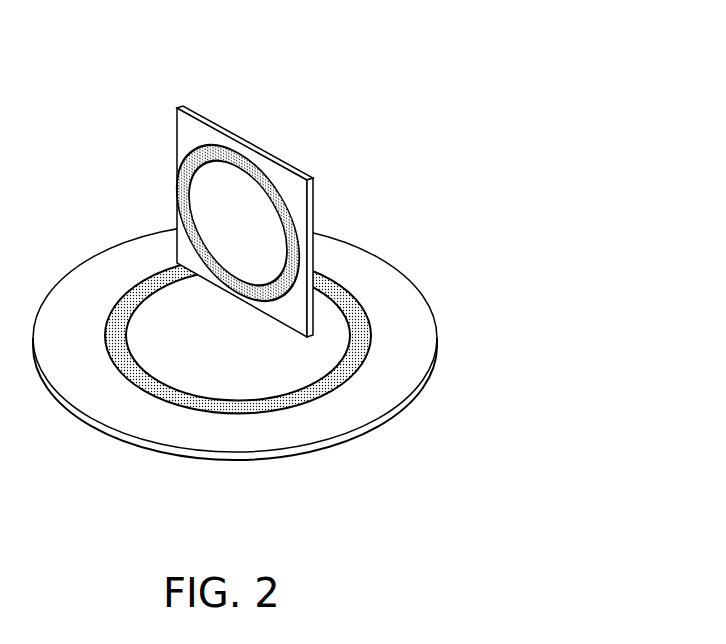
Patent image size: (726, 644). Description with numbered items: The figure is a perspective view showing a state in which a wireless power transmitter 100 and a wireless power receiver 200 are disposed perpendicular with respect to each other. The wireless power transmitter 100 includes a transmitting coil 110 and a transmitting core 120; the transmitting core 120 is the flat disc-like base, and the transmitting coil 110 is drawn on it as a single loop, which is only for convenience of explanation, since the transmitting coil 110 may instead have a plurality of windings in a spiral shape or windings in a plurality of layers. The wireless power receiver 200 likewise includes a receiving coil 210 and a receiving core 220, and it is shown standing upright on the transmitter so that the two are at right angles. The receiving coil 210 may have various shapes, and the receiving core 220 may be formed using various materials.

The wireless power transmitter 100 is at (235, 388).
The transmitting coil 110 is at (306, 381).
The transmitting core 120 is at (375, 393).
The wireless power receiver 200 is at (221, 175).
The receiving coil 210 is at (175, 180).
The receiving core 220 is at (193, 138).